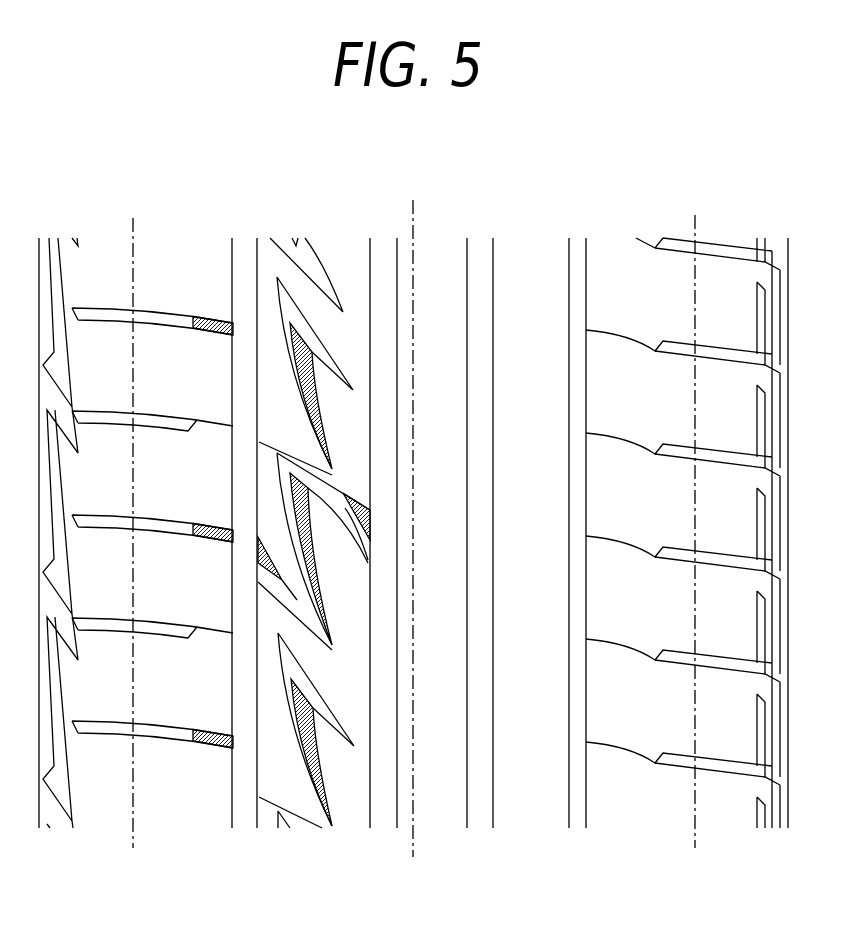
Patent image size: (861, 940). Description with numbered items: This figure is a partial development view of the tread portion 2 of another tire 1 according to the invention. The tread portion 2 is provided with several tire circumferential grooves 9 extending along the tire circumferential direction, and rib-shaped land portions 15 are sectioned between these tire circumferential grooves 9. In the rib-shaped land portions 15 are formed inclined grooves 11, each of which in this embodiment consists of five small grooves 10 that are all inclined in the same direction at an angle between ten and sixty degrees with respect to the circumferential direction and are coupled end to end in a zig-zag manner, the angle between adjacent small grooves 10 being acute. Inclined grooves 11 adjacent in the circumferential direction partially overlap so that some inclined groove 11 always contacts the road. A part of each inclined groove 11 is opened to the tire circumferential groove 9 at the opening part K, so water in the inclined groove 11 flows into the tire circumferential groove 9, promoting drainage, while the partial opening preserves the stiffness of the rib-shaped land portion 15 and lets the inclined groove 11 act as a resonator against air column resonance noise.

The tire 1 is at (751, 174).
The tread portion 2 is at (657, 220).
The tire circumferential groove 9 is at (243, 256).
The small groove 10 is at (306, 340).
The inclined groove 11 is at (372, 558).
The rib-shaped land portion 15 is at (407, 574).
The opening part K is at (372, 548).